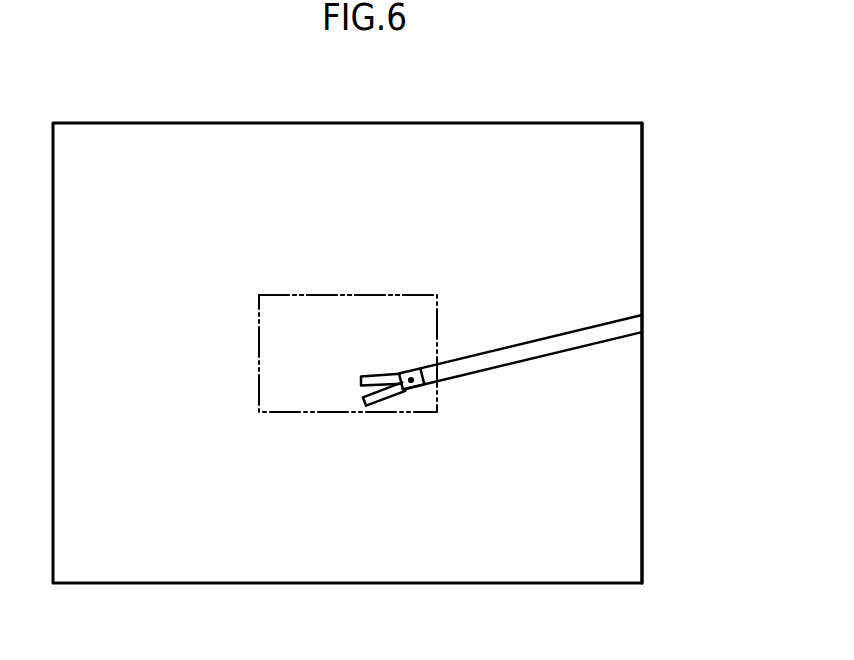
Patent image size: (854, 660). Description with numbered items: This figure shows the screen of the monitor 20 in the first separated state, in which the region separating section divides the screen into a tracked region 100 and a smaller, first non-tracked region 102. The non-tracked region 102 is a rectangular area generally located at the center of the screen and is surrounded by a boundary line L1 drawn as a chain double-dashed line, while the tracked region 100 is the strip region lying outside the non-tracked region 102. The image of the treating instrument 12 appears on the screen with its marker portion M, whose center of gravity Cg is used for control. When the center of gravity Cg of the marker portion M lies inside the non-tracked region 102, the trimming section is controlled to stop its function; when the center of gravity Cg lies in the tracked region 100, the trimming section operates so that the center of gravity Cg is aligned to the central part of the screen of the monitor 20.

The tracked region 100 is at (593, 155).
The monitor 20 is at (642, 270).
The non-tracked region 102 is at (300, 387).
The boundary line L1 is at (393, 294).
The treating instrument 12 is at (560, 325).
The marker portion M is at (411, 386).
The center of gravity Cg is at (416, 386).